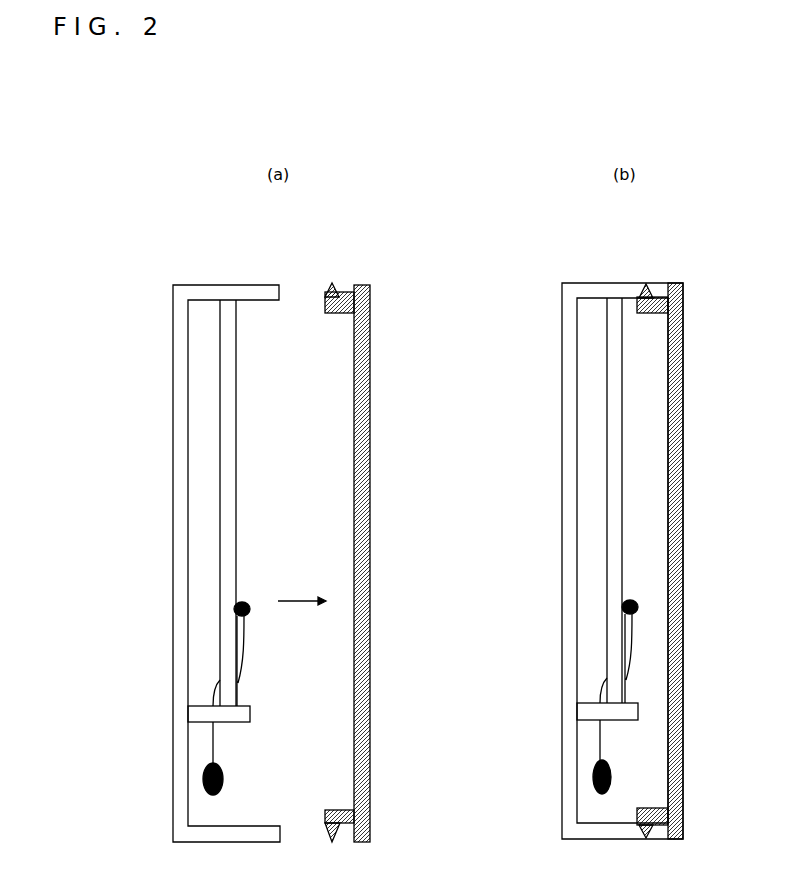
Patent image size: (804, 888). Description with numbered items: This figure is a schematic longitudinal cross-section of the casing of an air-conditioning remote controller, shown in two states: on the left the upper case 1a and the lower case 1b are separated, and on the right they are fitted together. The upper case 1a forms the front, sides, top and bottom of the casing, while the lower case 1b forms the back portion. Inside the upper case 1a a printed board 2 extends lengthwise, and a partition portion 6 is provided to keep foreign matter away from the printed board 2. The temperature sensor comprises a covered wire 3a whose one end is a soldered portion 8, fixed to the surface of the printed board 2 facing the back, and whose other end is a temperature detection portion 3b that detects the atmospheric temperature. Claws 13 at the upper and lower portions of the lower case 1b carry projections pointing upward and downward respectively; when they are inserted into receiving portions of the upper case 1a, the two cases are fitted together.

The upper case 1a is at (206, 285).
The lower case 1b is at (370, 630).
The printed board 2 is at (236, 433).
The covered wire 3a is at (250, 660).
The temperature detection portion 3b is at (224, 780).
The partition portion 6 is at (252, 706).
The soldered portion 8 is at (249, 606).
The claws 13 is at (338, 291).